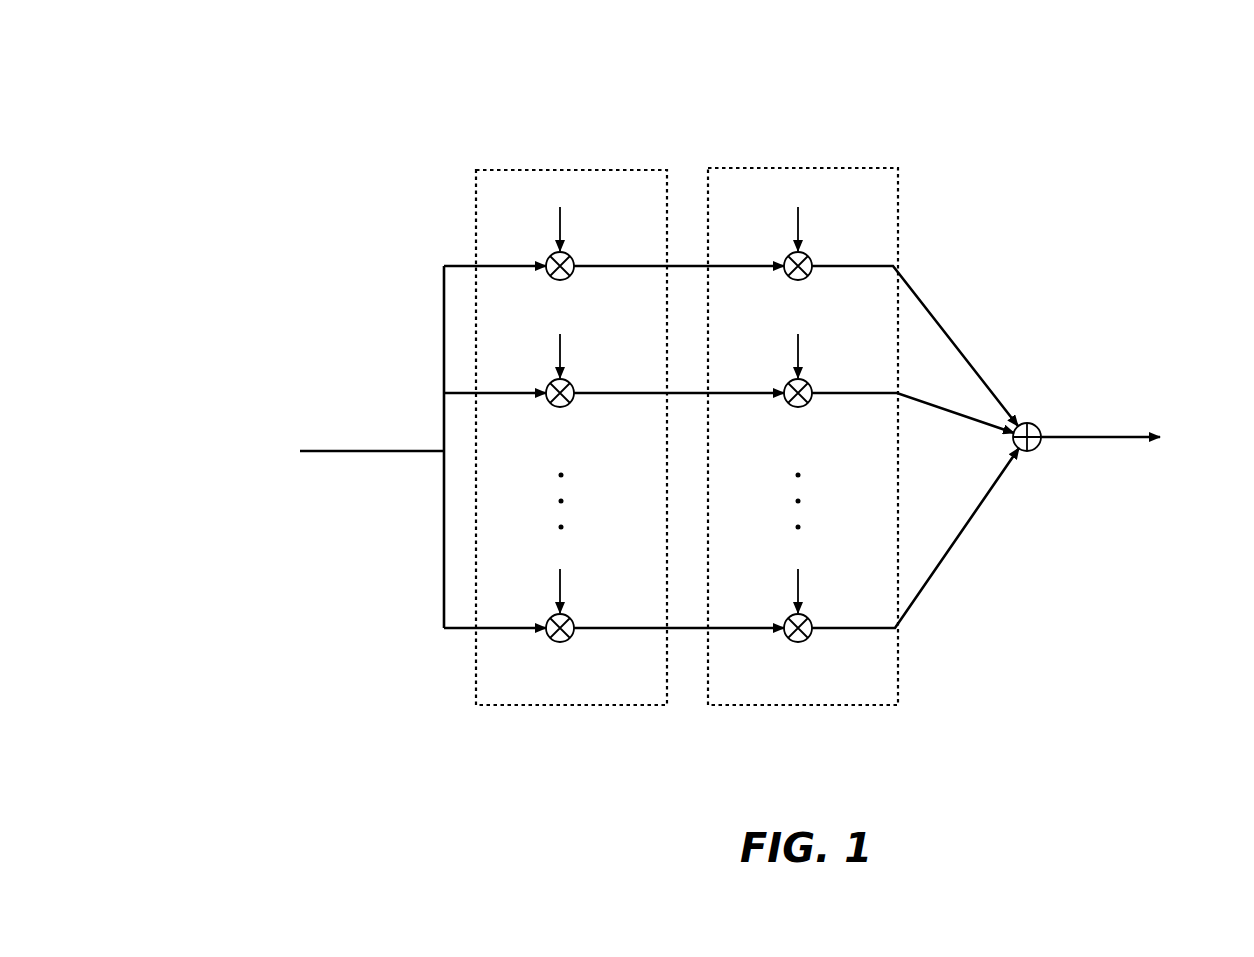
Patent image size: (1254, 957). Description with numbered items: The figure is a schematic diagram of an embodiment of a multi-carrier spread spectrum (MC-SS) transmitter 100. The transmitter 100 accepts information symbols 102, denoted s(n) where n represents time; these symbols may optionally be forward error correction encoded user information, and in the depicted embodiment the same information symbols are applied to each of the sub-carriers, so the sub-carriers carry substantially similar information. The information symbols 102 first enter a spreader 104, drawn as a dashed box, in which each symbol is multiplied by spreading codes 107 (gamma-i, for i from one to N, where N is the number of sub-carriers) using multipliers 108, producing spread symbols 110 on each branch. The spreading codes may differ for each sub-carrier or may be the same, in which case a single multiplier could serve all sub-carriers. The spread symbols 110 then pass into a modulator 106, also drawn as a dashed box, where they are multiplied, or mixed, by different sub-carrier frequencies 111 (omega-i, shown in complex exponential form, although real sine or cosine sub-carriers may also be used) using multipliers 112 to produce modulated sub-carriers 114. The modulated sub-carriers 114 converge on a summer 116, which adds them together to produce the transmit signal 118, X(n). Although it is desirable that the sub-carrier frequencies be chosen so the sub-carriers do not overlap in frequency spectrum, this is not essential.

The MC-SS transmitter 100 is at (296, 96).
The information symbols 102 is at (392, 450).
The spreader 104 is at (488, 169).
The modulator 106 is at (717, 167).
The spreading codes 107 is at (558, 224).
The multipliers 108 is at (570, 278).
The spread symbols 110 is at (687, 265).
The sub-carrier frequencies 111 is at (796, 223).
The multipliers 112 is at (808, 278).
The modulated sub-carriers 114 is at (932, 317).
The summer 116 is at (1027, 423).
The transmit signal 118 is at (1074, 436).